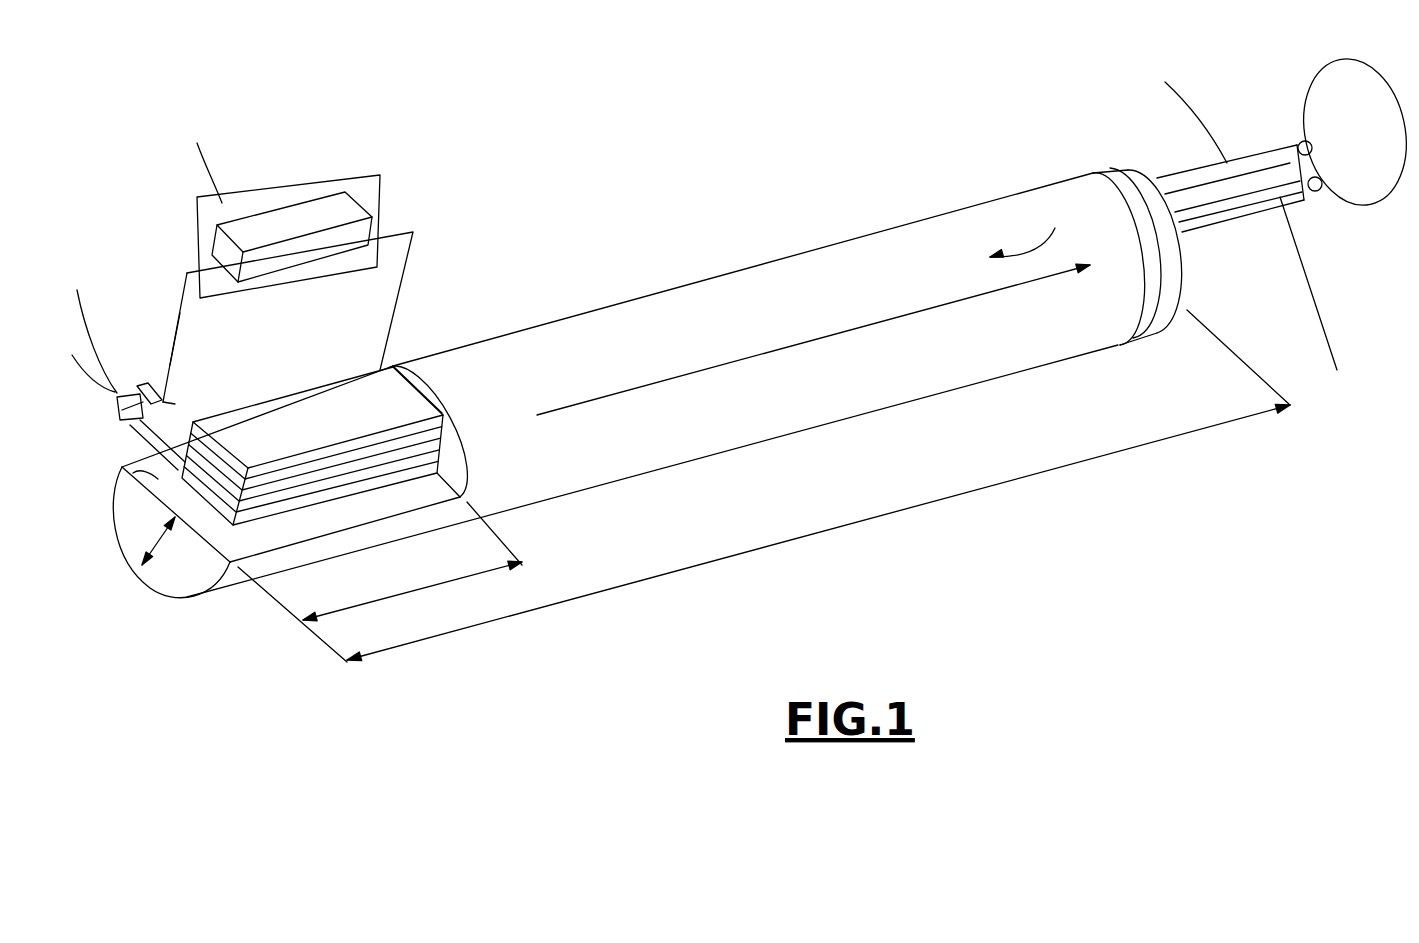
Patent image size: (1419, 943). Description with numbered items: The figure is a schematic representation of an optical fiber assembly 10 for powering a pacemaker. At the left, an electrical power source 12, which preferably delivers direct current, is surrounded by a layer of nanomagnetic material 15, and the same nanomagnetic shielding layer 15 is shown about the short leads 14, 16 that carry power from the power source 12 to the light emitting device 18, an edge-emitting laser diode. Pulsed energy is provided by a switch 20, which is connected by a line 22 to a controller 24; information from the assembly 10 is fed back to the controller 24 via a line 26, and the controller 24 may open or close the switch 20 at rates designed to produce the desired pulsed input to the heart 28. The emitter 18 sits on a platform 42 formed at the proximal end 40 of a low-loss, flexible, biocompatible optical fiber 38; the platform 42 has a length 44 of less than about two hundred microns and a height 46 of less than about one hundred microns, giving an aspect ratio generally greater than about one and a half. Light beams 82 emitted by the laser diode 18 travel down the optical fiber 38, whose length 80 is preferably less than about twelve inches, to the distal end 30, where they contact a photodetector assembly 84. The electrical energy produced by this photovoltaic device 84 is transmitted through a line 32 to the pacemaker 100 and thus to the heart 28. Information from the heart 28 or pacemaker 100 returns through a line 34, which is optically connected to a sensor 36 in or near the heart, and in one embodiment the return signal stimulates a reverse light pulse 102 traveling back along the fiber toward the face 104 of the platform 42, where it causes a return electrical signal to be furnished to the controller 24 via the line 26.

The optical fiber assembly 10 is at (580, 243).
The electrical power source 12 is at (118, 396).
The lead 14 is at (157, 383).
The layer of nanomagnetic material 15 is at (708, 256).
The lead 16 is at (132, 438).
The light emitting device 18 is at (317, 407).
The switch 20 is at (173, 403).
The line 22 is at (180, 313).
The controller 24 is at (377, 207).
The line 26 is at (410, 260).
The heart 28 is at (1323, 80).
The distal end 30 is at (1188, 267).
The line 32 is at (1260, 200).
The line 34 is at (1178, 187).
The sensor 36 is at (1298, 143).
The optical fiber 38 is at (660, 473).
The proximal end 40 is at (190, 580).
The platform 42 is at (118, 493).
The length 44 is at (450, 578).
The height 46 is at (140, 537).
The length 80 is at (907, 505).
The light beams 82 is at (692, 352).
The photodetector assembly 84 is at (1157, 333).
The pacemaker 100 is at (1313, 197).
The reverse light pulse 102 is at (1033, 228).
The face 104 is at (422, 385).